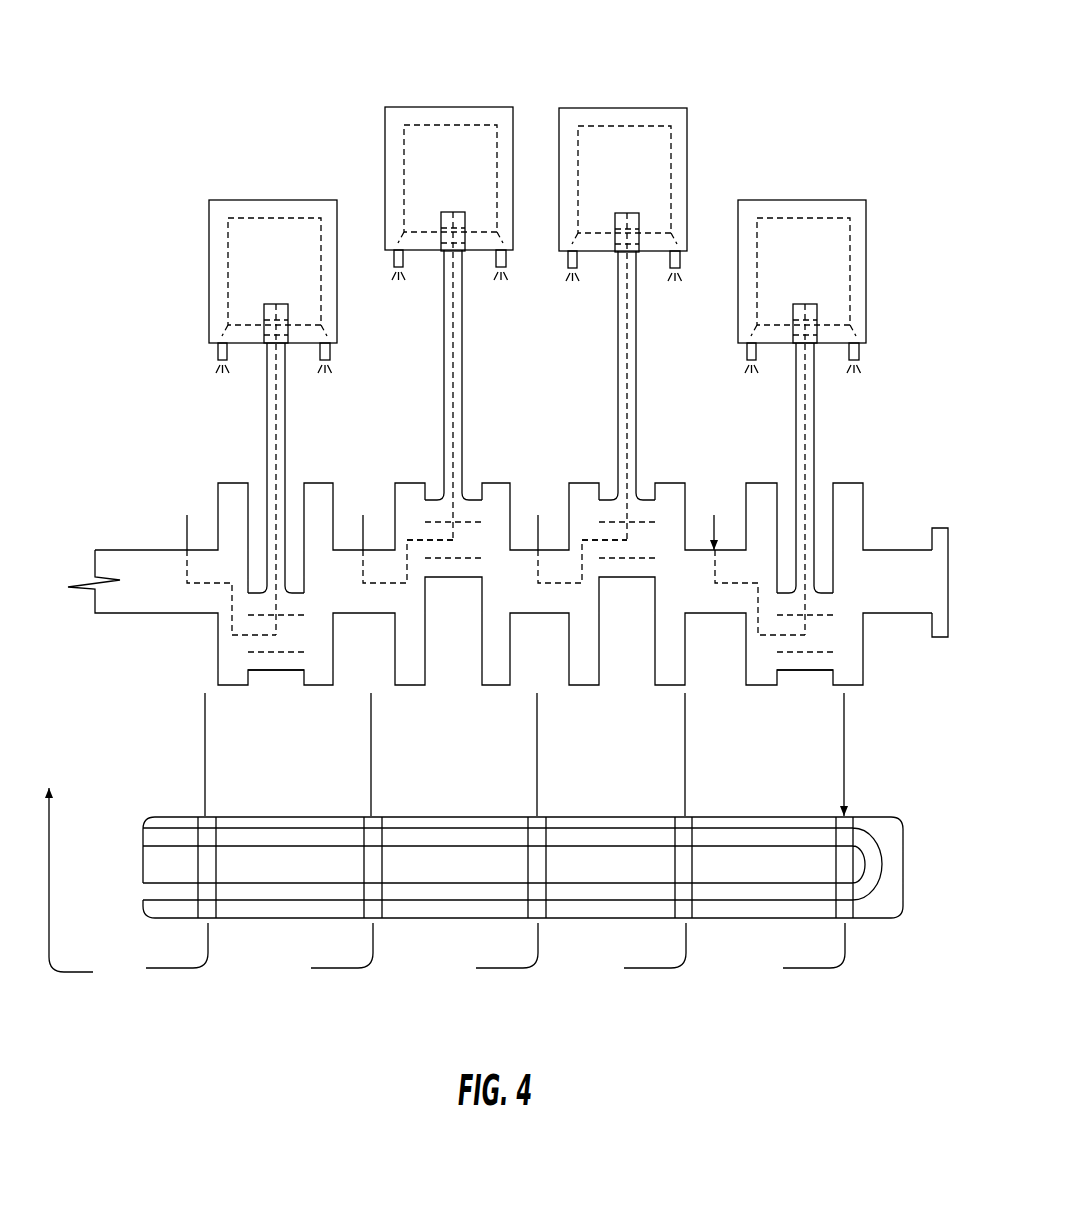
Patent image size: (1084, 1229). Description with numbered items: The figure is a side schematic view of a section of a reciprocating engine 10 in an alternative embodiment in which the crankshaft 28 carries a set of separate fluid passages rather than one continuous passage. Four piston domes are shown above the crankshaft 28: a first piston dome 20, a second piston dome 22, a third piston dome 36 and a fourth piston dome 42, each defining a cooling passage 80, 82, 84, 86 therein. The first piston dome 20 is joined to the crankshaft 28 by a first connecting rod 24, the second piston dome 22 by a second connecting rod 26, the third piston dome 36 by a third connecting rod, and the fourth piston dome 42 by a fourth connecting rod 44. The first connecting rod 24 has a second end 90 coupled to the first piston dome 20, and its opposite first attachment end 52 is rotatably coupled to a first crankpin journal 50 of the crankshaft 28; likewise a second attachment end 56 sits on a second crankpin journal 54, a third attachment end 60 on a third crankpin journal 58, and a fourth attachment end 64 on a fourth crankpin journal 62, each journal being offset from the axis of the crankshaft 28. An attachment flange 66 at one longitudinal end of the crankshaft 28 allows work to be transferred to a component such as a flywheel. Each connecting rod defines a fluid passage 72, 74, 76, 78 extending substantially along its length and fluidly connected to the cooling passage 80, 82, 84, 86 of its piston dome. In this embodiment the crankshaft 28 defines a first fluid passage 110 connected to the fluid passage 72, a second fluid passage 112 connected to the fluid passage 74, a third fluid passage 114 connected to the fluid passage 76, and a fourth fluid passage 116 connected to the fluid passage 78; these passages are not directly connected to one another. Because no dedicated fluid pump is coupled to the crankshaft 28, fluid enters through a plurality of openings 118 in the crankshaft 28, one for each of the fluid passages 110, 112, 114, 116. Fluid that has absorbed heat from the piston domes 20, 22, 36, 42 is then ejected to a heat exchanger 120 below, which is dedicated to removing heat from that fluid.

The reciprocating engine 10 is at (821, 97).
The first piston dome 20 is at (246, 200).
The second piston dome 22 is at (457, 107).
The third piston dome 36 is at (648, 108).
The fourth piston dome 42 is at (827, 200).
The cooling passage 80 is at (321, 252).
The cooling passage 82 is at (498, 157).
The cooling passage 84 is at (672, 158).
The cooling passage 86 is at (852, 260).
The second end 90 is at (297, 356).
The first connecting rod 24 is at (267, 441).
The second connecting rod 26 is at (463, 320).
The fourth connecting rod 44 is at (815, 400).
The fluid passage 72 is at (277, 448).
The fluid passage 74 is at (462, 374).
The fluid passage 76 is at (637, 396).
The fluid passage 78 is at (815, 452).
The crankshaft 28 is at (127, 550).
The attachment flange 66 is at (950, 570).
The first crankpin journal 50 is at (288, 652).
The first attachment end 52 is at (272, 693).
The second crankpin journal 54 is at (470, 505).
The second attachment end 56 is at (449, 588).
The third crankpin journal 58 is at (637, 558).
The third attachment end 60 is at (617, 588).
The fourth crankpin journal 62 is at (813, 652).
The fourth attachment end 64 is at (798, 691).
The first fluid passage 110 is at (197, 585).
The second fluid passage 112 is at (380, 585).
The third fluid passage 114 is at (570, 585).
The fourth fluid passage 116 is at (735, 585).
The openings 118 is at (166, 531).
The heat exchanger 120 is at (893, 829).